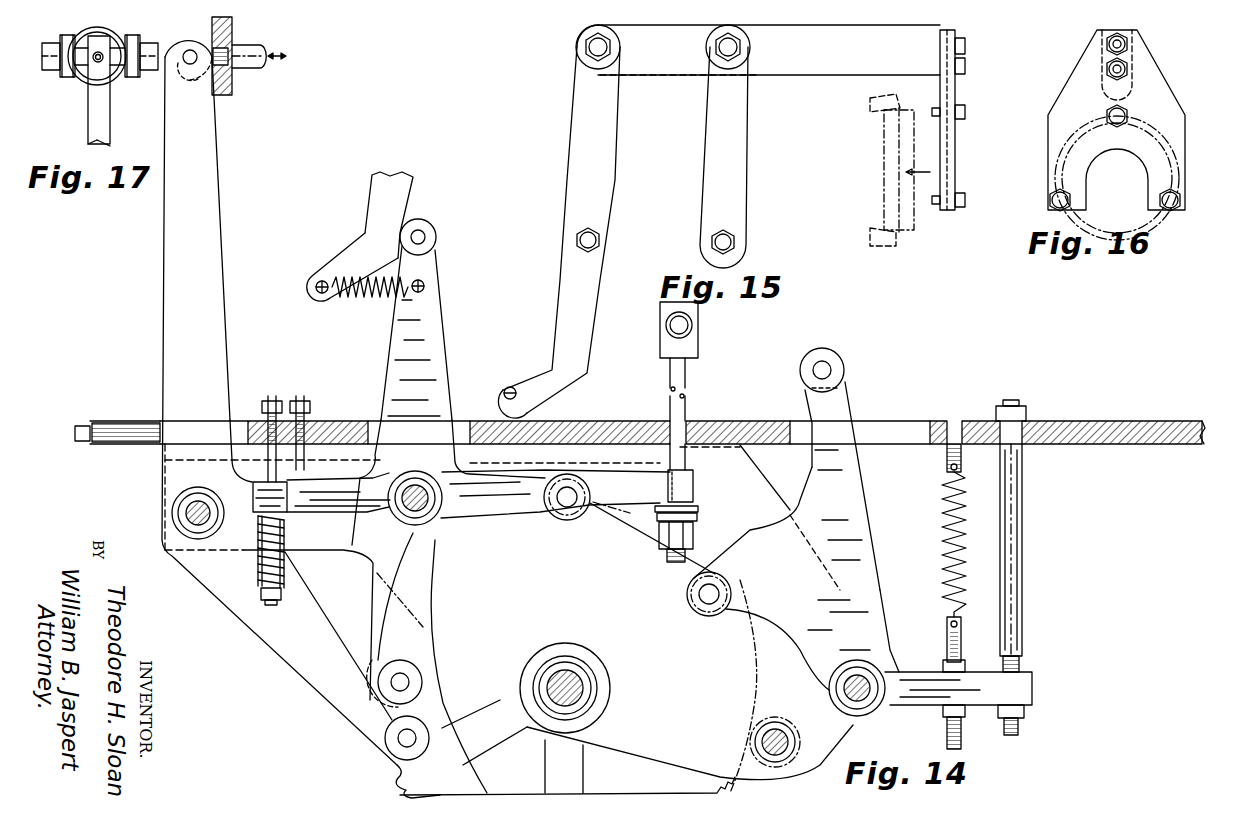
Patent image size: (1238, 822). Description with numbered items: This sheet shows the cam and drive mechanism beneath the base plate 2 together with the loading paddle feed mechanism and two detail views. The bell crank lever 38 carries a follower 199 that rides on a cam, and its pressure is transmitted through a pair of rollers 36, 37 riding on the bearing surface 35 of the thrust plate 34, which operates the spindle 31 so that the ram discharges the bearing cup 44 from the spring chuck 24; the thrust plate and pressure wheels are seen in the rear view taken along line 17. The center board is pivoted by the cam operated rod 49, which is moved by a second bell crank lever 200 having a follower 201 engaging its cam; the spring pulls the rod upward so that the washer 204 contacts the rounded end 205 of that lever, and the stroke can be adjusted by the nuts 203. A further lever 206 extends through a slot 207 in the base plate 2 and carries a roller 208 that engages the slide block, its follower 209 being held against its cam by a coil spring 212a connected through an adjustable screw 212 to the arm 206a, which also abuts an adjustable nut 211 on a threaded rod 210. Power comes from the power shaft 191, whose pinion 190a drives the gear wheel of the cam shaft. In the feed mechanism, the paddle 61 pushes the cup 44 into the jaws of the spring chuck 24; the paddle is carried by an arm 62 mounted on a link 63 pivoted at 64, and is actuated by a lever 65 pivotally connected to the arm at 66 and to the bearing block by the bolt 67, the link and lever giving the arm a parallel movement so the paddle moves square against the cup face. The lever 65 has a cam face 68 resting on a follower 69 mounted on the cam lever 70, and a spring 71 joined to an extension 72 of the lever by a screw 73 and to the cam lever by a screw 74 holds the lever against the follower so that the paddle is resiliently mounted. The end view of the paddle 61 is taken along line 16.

In FIG. 14, the base plate 2 is at (722, 421).
In FIG. 15, the section line 16— 16 is at (973, 20).
In FIG. 14, the section line 17— 17 is at (163, 17).
In FIG. 15, the spring chuck 24 is at (878, 246).
In FIG. 14, the spindle 31 is at (250, 30).
In FIG. 14, the thrust plate 34 is at (224, 96).
In FIG. 14, the bearing surface 35 is at (210, 48).
In FIG. 17, the roller 36 is at (66, 78).
In FIG. 14, the roller 36 is at (180, 80).
In FIG. 17, the roller 37 is at (128, 78).
In FIG. 17, the bell crank lever 38 is at (88, 128).
In FIG. 14, the bell crank lever 38 is at (216, 222).
In FIG. 15, the bearing cup 44 is at (912, 232).
In FIG. 16, the bearing cup 44 is at (1070, 222).
In FIG. 14, the cam operated rod 49 is at (690, 374).
In FIG. 15, the paddle 61 is at (952, 166).
In FIG. 16, the paddle 61 is at (1170, 115).
In FIG. 15, the arm 62 is at (795, 78).
In FIG. 15, the link 63 is at (750, 160).
In FIG. 15, the pivot 64 is at (714, 246).
In FIG. 15, the lever 65 is at (613, 132).
In FIG. 15, the pivotal connection 66 is at (582, 42).
In FIG. 15, the bolt 67 is at (600, 234).
In FIG. 15, the cam face 68 is at (588, 346).
In FIG. 14, the cam face 68 is at (398, 250).
In FIG. 14, the follower 69 is at (436, 232).
In FIG. 14, the cam lever 70 is at (446, 352).
In FIG. 14, the spring 71 is at (364, 300).
In FIG. 15, the extension 72 is at (520, 340).
In FIG. 14, the extension 72 is at (332, 264).
In FIG. 15, the screw 73 is at (504, 393).
In FIG. 14, the screw 73 is at (316, 287).
In FIG. 14, the screw 74 is at (426, 286).
In FIG. 14, the pinion 190a is at (795, 775).
In FIG. 14, the power shaft 191 is at (788, 744).
In FIG. 14, the follower 199 is at (430, 712).
In FIG. 14, the bell crank lever 200 is at (436, 590).
In FIG. 14, the follower 201 is at (422, 680).
In FIG. 14, the nuts 203 is at (694, 536).
In FIG. 14, the washer 204 is at (699, 506).
In FIG. 14, the rounded end 205 is at (694, 476).
In FIG. 14, the lever 206 is at (865, 500).
In FIG. 14, the arm 206a is at (1034, 688).
In FIG. 14, the slot 207 is at (890, 421).
In FIG. 14, the roller 208 is at (842, 356).
In FIG. 14, the follower 209 is at (710, 616).
In FIG. 14, the threaded rod 210 is at (1024, 506).
In FIG. 14, the adjustable nut 211 is at (1024, 722).
In FIG. 14, the adjustable screw 212 is at (960, 748).
In FIG. 14, the coil spring 212a is at (953, 548).